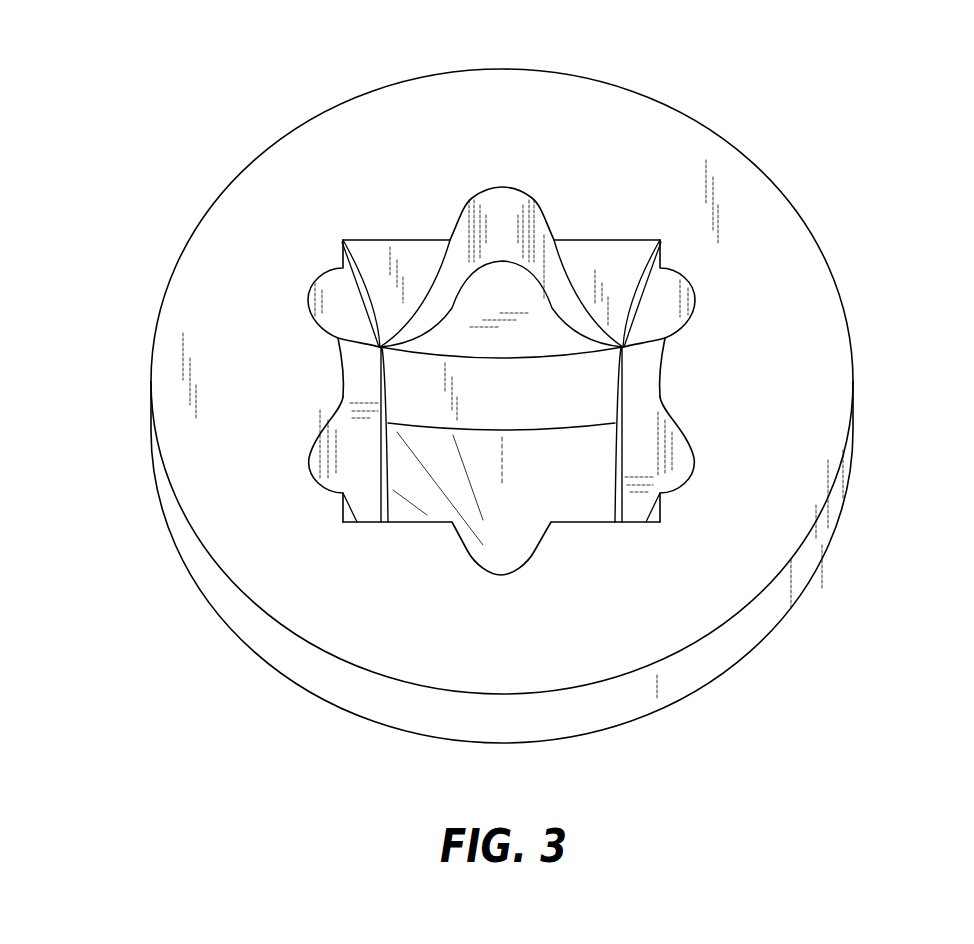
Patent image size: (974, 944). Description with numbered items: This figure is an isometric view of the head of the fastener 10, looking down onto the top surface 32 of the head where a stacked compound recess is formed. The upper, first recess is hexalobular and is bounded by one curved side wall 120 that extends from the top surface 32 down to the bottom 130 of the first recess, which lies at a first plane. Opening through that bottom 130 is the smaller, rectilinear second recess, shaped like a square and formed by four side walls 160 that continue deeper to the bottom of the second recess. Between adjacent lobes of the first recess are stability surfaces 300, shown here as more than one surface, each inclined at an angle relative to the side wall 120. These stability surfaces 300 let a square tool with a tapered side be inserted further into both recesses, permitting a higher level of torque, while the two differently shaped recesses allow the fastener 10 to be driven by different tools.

The fastener 10 is at (475, 406).
The top surface 32 is at (773, 297).
The stability surface 300 is at (591, 401).
The side wall 120 is at (684, 310).
The bottom 130 is at (642, 400).
The side wall 160 is at (567, 403).